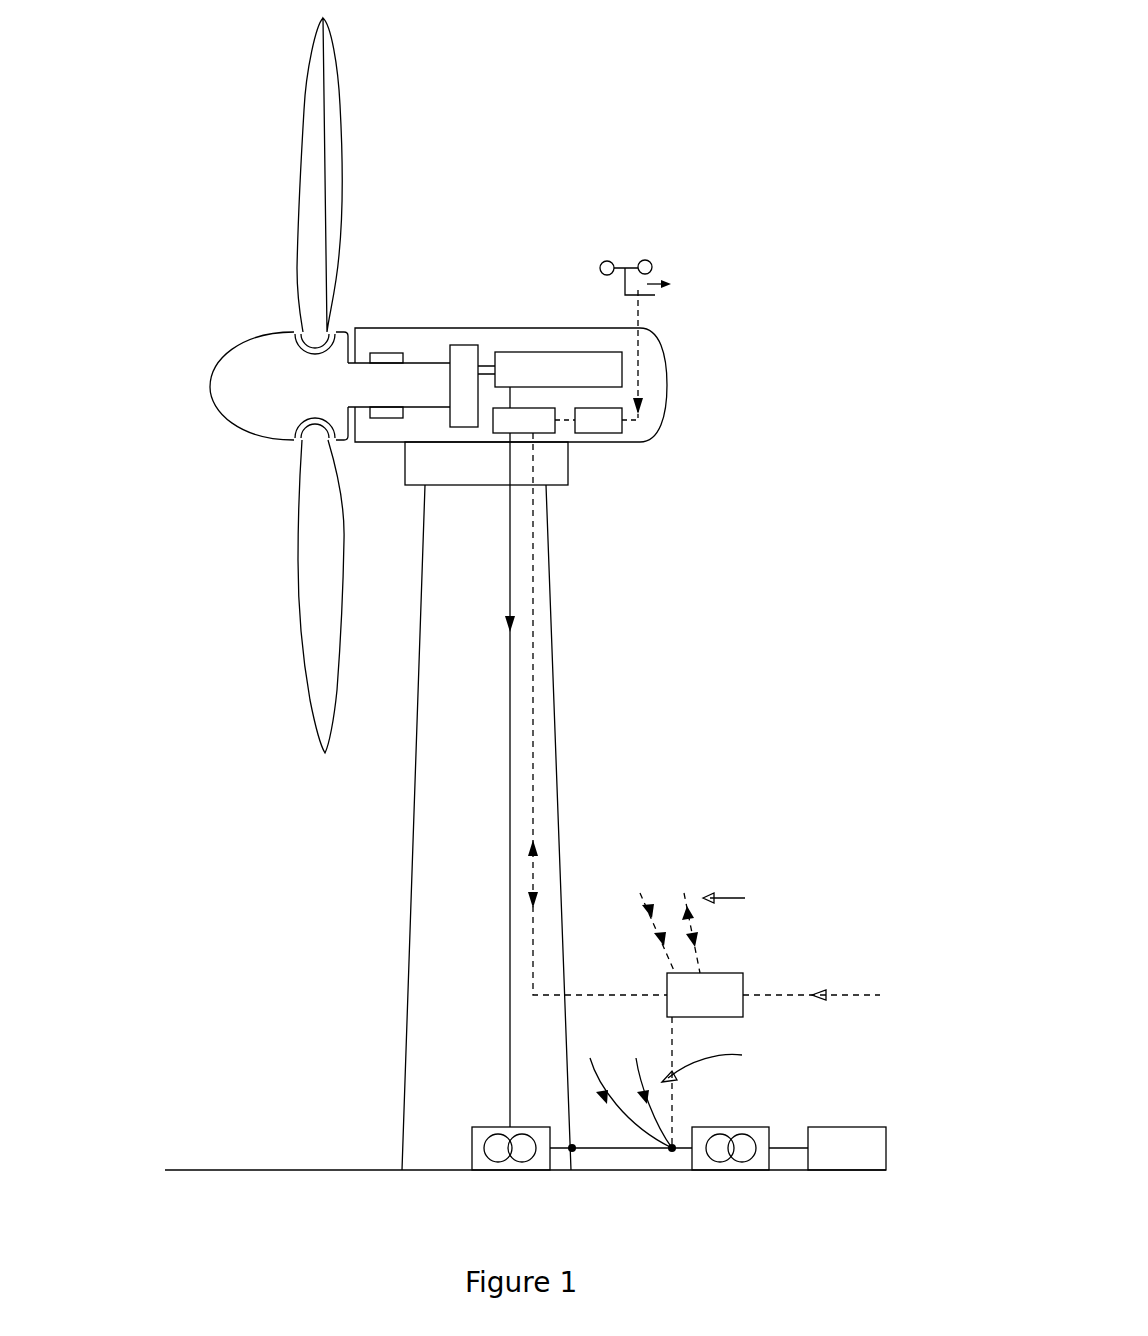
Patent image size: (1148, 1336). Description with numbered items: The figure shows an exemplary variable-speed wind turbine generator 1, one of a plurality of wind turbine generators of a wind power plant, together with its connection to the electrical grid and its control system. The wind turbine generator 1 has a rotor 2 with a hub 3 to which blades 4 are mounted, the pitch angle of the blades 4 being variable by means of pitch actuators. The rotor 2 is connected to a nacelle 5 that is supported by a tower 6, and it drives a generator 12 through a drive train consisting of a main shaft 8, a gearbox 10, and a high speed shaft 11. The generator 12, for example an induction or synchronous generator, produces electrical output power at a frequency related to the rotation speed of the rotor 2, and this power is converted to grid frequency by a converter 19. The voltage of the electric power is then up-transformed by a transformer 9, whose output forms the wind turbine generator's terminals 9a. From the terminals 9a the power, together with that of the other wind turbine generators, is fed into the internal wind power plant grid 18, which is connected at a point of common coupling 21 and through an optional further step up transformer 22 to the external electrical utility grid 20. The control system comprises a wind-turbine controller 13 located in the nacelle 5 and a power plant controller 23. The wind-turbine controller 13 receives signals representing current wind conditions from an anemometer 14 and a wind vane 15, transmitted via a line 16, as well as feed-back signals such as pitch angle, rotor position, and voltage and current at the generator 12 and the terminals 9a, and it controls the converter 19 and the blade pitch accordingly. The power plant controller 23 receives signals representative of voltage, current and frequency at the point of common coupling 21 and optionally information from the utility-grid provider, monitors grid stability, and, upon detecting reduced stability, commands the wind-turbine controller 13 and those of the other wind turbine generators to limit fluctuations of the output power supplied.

The wind turbine generator 1 is at (503, 158).
The rotor 2 is at (205, 208).
The hub 3 is at (210, 394).
The blades 4 is at (340, 137).
The nacelle 5 is at (388, 328).
The tower 6 is at (410, 915).
The main shaft 8 is at (423, 353).
The transformer 9 is at (483, 1127).
The terminals 9a is at (575, 1153).
The gearbox 10 is at (458, 345).
The high speed shaft 11 is at (485, 365).
The generator 12 is at (554, 352).
The wind-turbine controller 13 is at (642, 430).
The anemometer 14 is at (645, 258).
The wind vane 15 is at (678, 268).
The line 16 is at (655, 358).
The wind power plant grid 18 is at (627, 1152).
The converter 19 is at (497, 434).
The utility grid 20 is at (860, 1172).
The point of common coupling 21 is at (672, 1158).
The step up transformer 22 is at (757, 1168).
The power plant controller 23 is at (730, 973).